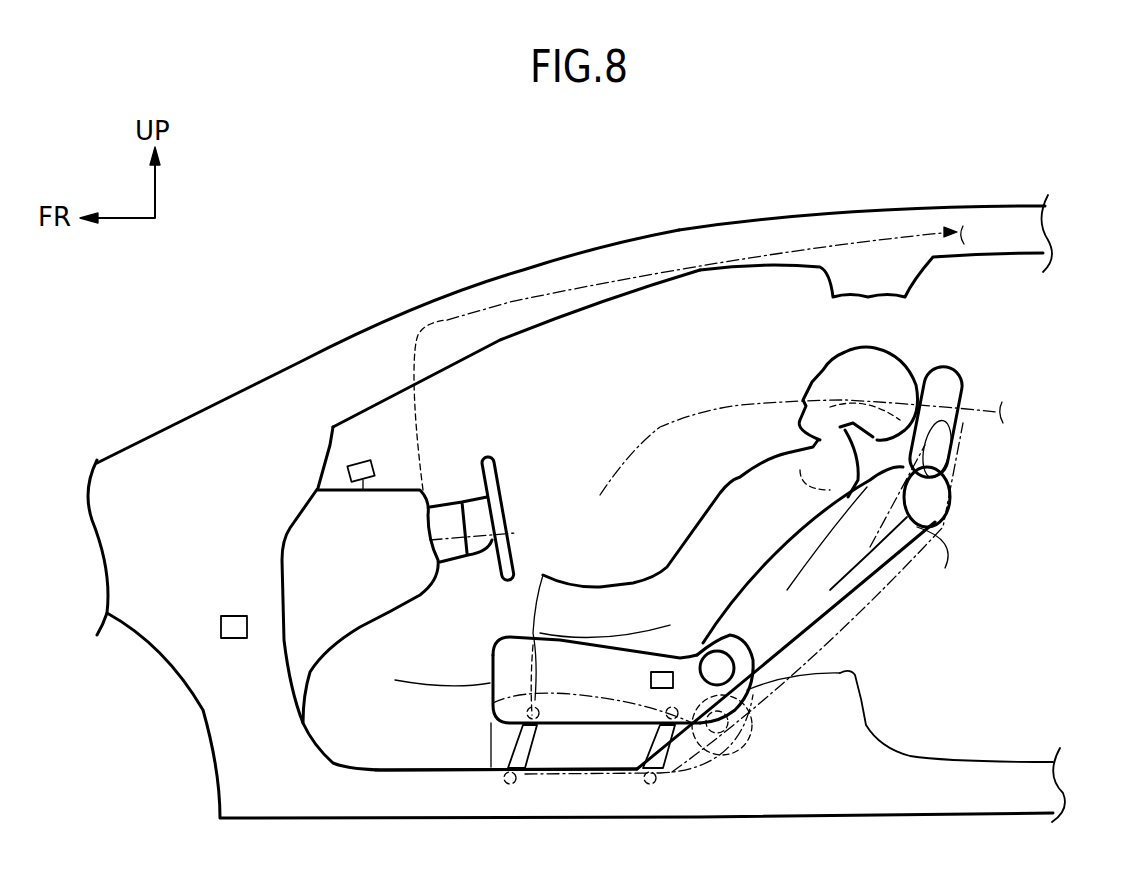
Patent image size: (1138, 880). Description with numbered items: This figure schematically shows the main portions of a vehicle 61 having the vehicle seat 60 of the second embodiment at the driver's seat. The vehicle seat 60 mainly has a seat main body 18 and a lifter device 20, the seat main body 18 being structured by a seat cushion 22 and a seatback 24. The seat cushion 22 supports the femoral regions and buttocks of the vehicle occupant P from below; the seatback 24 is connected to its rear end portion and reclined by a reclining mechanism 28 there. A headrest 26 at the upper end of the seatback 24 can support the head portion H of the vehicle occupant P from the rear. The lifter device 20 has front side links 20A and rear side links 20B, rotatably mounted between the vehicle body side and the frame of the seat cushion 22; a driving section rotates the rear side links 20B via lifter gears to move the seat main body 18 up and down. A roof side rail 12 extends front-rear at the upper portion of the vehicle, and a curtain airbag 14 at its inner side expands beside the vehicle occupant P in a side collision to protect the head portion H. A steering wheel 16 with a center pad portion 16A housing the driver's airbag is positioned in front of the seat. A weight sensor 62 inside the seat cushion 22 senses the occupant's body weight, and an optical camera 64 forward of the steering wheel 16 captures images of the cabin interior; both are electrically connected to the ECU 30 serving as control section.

The roof side rail 12 is at (860, 223).
The curtain airbag 14 is at (565, 287).
The steering wheel 16 is at (484, 452).
The center pad portion 16A is at (493, 557).
The seat main body 18 is at (863, 590).
The lifter device 20 is at (677, 737).
The front side links 20A is at (533, 748).
The rear side links 20B is at (678, 750).
The seat cushion 22 is at (490, 683).
The seatback 24 is at (947, 560).
The headrest 26 is at (965, 380).
The reclining mechanism 28 is at (753, 653).
The ECU 30 is at (233, 613).
The vehicle seat 60 is at (978, 497).
The vehicle 61 is at (335, 252).
The weight sensor 62 is at (667, 670).
The optical camera 64 is at (355, 462).
The head portion H is at (897, 355).
The vehicle occupant P is at (737, 473).